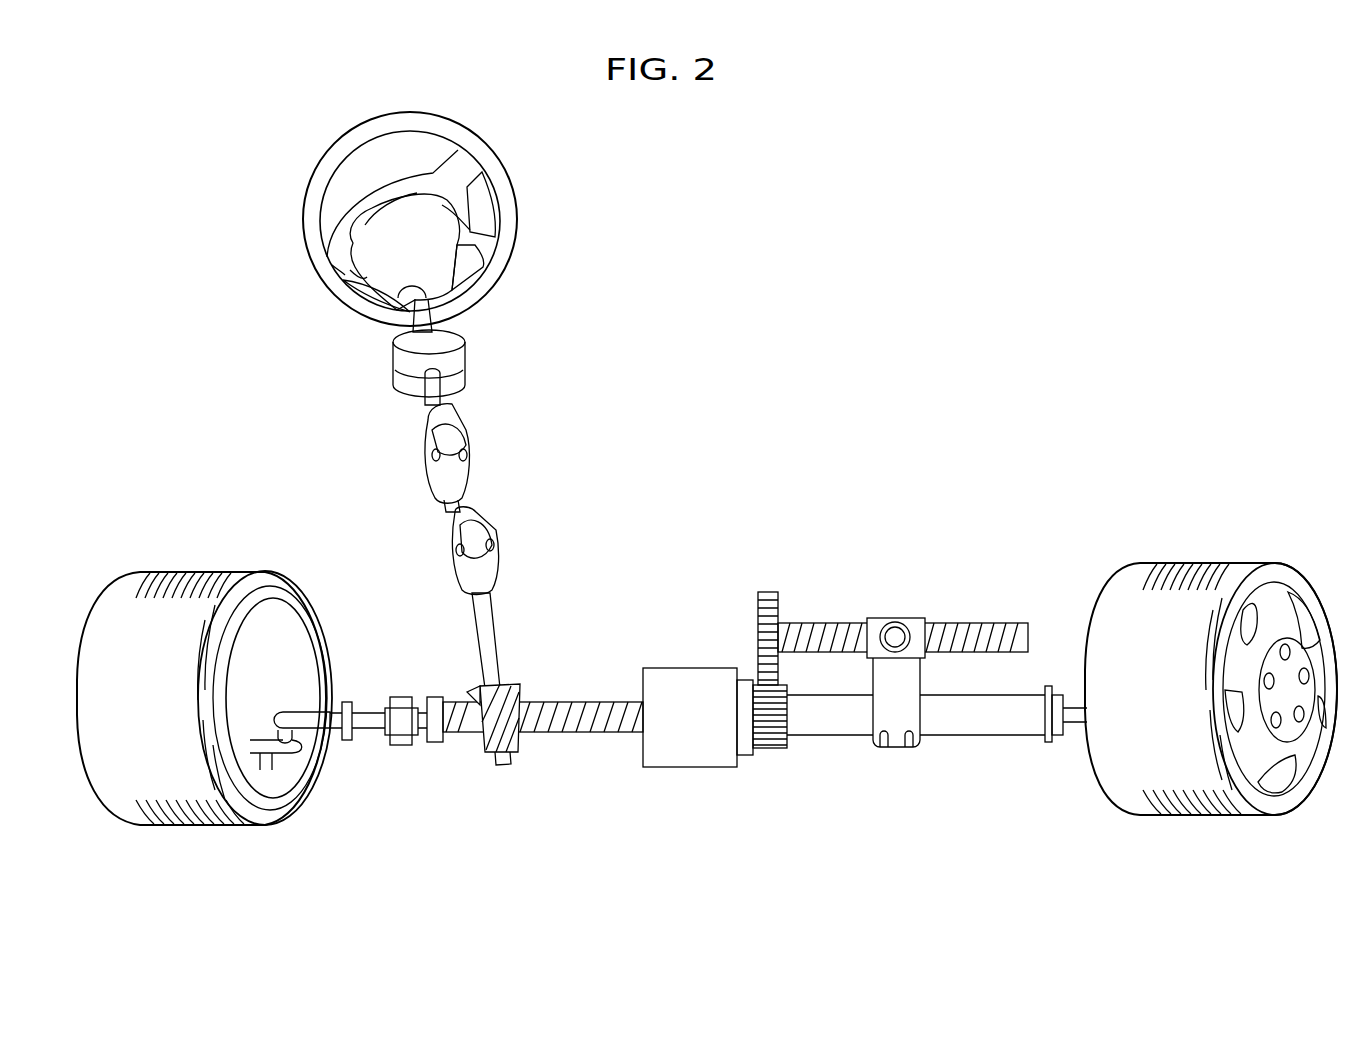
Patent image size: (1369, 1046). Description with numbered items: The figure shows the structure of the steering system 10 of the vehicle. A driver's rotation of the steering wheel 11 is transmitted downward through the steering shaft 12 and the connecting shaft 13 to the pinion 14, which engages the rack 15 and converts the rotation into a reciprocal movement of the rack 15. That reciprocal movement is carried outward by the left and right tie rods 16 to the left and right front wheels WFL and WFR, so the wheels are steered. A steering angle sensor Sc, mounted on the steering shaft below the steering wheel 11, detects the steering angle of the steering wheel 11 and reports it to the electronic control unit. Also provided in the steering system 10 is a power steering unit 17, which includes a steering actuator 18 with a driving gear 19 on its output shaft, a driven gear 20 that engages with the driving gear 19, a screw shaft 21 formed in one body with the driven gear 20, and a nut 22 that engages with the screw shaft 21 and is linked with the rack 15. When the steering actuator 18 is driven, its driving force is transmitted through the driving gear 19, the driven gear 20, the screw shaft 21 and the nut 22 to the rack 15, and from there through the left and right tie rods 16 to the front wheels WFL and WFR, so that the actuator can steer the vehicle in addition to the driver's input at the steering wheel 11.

The steering system 10 is at (378, 431).
The steering wheel 11 is at (500, 190).
The steering angle sensor Sc is at (452, 352).
The steering shaft 12 is at (440, 388).
The connecting shaft 13 is at (467, 503).
The pinion 14 is at (506, 735).
The rack 15 is at (597, 702).
The tie rods 16 is at (365, 730).
The power steering unit 17 is at (684, 778).
The steering actuator 18 is at (697, 745).
The driving gear 19 is at (766, 742).
The driven gear 20 is at (770, 592).
The screw shaft 21 is at (975, 623).
The nut 22 is at (880, 618).
The right front wheel WFR is at (197, 570).
The left front wheel WFL is at (1205, 562).